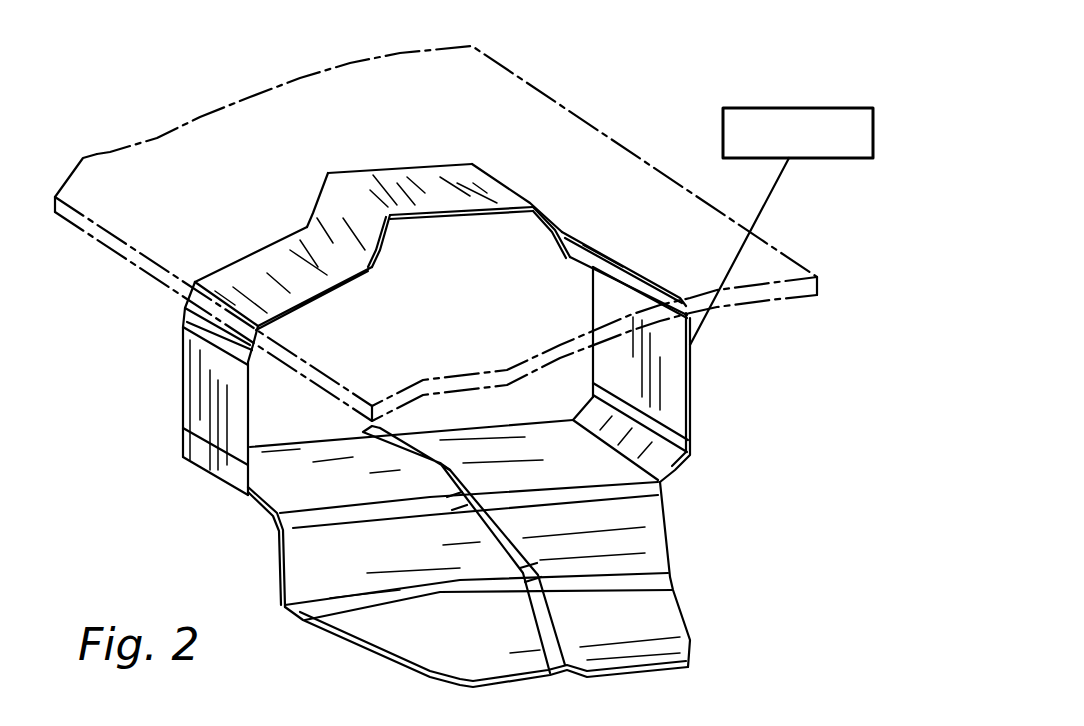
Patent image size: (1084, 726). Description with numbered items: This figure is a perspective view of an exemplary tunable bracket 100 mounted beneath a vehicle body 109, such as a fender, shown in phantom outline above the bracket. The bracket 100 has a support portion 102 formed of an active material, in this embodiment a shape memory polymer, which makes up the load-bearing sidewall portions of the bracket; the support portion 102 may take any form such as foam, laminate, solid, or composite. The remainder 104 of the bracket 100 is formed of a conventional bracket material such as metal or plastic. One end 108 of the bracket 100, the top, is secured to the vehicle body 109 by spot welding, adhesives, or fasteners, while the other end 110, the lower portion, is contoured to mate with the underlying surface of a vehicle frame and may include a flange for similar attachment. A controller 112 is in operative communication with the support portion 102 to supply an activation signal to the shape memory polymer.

The tunable bracket 100 is at (427, 422).
The support portion 102 is at (707, 337).
The remainder 104 is at (622, 262).
The one end 108 is at (302, 181).
The vehicle body 109 is at (560, 103).
The other end 110 is at (263, 524).
The controller 112 is at (808, 108).